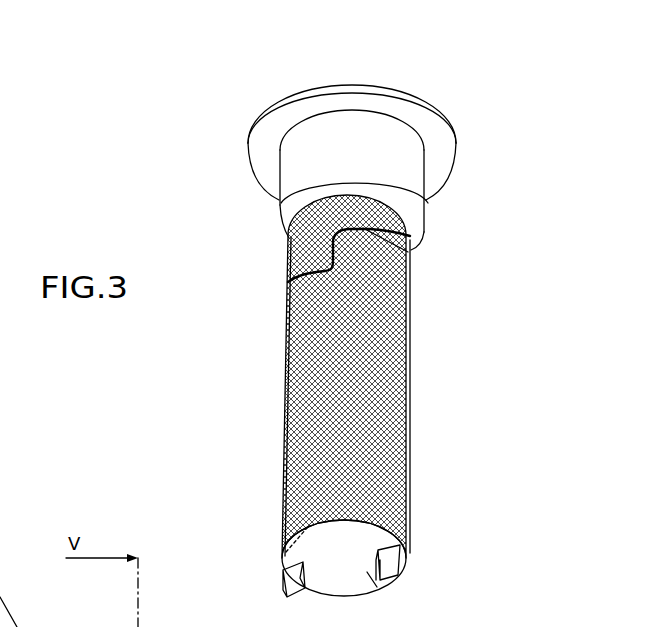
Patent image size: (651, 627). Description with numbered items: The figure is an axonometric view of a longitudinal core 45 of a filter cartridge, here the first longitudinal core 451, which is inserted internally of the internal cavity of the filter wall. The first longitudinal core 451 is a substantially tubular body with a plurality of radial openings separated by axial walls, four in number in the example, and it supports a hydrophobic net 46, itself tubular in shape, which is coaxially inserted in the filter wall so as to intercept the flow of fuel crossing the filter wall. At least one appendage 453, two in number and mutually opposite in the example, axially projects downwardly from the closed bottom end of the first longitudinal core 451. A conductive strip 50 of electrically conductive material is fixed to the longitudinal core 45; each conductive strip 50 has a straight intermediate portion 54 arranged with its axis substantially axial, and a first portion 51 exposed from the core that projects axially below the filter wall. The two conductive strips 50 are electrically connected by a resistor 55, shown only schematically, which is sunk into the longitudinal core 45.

The longitudinal core 45 is at (152, 124).
The first longitudinal core 451 is at (410, 168).
The hydrophobic net 46 is at (357, 425).
The conductive strip 50 is at (418, 349).
The first portion 51 is at (342, 596).
The intermediate portion 54 is at (413, 296).
The resistor 55 is at (413, 252).
The appendage 453 is at (287, 571).